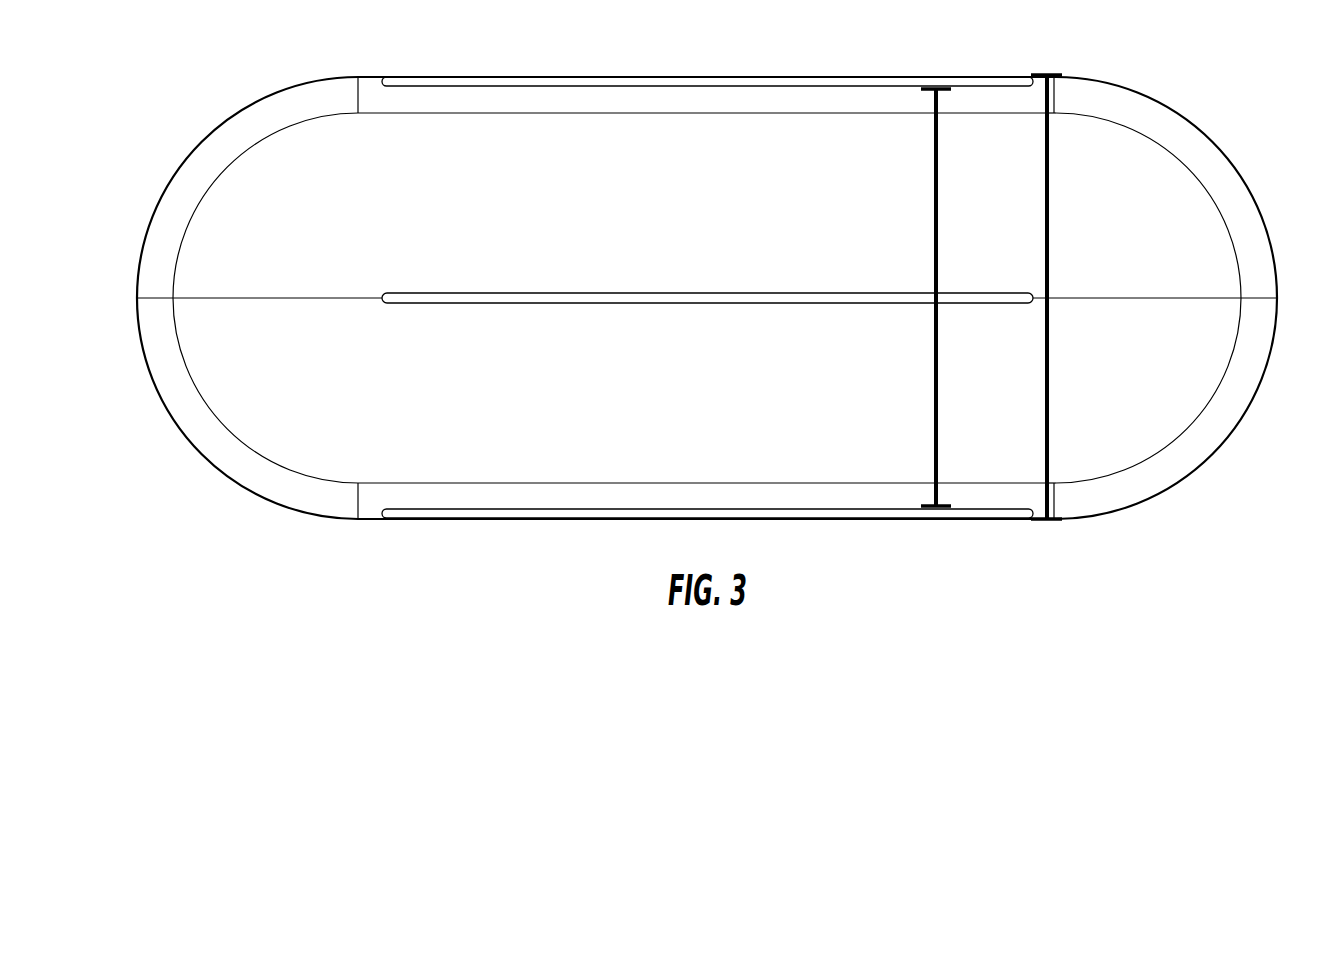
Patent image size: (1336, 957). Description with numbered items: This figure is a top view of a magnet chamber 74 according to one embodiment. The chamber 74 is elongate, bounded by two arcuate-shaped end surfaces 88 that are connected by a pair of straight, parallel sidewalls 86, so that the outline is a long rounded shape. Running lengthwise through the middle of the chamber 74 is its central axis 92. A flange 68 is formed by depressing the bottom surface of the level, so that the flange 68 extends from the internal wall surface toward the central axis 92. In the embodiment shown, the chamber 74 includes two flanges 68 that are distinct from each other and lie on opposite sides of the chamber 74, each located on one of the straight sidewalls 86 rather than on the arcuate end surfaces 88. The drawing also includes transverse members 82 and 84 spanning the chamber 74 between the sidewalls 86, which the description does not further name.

The flange 68 is at (407, 90).
The chamber 74 is at (233, 363).
The end plate 82 is at (1052, 236).
The baffle plate 84 is at (933, 228).
The sidewall 86 is at (383, 74).
The arcuate-shaped end surface 88 is at (165, 192).
The central axis 92 is at (570, 292).